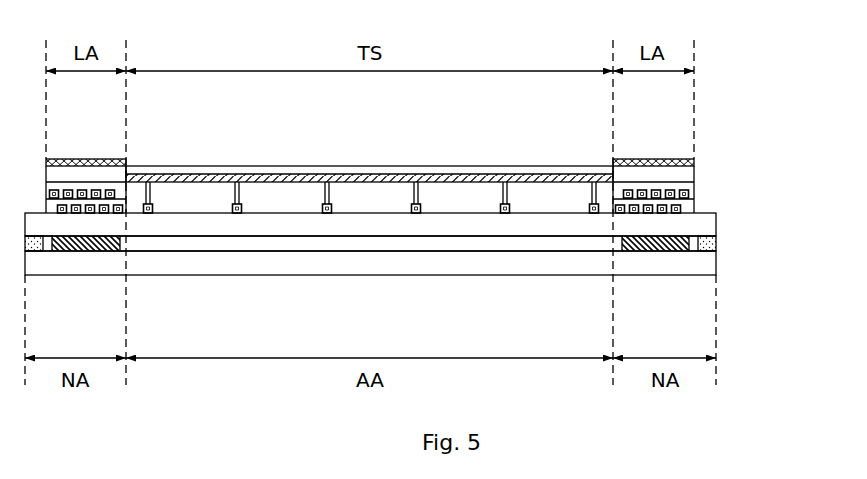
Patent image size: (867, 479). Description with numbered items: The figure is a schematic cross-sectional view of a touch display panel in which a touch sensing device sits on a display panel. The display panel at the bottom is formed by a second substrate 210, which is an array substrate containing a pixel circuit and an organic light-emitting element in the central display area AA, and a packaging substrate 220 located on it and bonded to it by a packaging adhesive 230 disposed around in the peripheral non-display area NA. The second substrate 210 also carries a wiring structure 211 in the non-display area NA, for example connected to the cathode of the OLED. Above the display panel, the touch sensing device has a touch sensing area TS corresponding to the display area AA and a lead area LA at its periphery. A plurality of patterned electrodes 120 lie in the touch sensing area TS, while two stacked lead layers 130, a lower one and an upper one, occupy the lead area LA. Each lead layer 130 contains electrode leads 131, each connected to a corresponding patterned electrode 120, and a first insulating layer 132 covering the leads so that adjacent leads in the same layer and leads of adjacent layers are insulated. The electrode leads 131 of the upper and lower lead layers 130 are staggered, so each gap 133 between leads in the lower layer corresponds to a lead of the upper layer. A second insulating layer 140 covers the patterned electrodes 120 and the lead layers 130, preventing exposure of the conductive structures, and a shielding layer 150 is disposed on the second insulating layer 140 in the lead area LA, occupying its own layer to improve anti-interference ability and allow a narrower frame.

The patterned electrodes 120 is at (462, 181).
The shielding layer 150 is at (623, 162).
The second insulating layer 140 is at (679, 175).
The lead layers 130 is at (450, 202).
The first insulating layer 132 is at (683, 192).
The electrode leads 131 is at (682, 206).
The gaps 133 is at (657, 212).
The packaging substrate 220 is at (365, 224).
The wiring structure 211 is at (660, 252).
The packaging adhesive 230 is at (708, 245).
The second substrate 210 is at (518, 262).